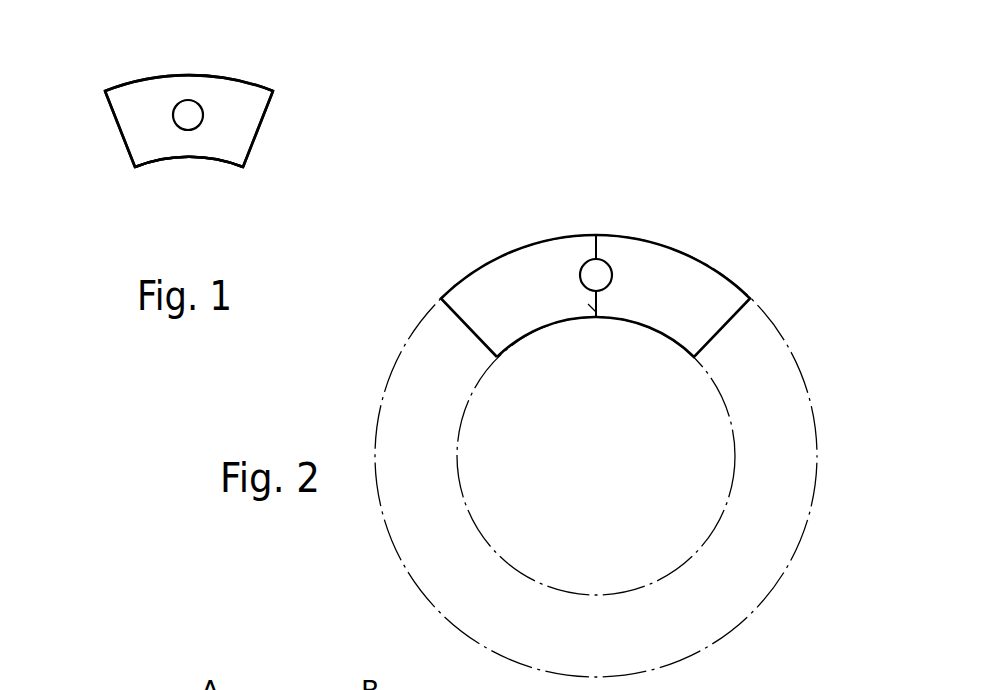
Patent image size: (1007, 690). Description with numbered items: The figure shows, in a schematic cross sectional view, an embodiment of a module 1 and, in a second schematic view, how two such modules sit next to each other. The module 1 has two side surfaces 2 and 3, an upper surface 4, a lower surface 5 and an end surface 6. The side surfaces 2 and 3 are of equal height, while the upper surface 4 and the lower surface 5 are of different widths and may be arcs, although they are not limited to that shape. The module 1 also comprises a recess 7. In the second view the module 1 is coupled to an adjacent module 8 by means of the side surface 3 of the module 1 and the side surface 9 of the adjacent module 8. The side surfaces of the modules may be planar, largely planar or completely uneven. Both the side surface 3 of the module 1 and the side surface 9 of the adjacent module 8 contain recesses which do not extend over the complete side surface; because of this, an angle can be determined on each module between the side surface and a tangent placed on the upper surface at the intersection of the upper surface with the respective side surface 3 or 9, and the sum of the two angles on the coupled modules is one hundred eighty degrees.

In FIG. 1, the module 1 is at (324, 88).
In FIG. 2, the module 1 is at (493, 295).
In FIG. 1, the side surface 2 is at (113, 115).
In FIG. 1, the side surface 3 is at (267, 113).
In FIG. 2, the side surface 3 is at (600, 303).
In FIG. 1, the upper surface 4 is at (168, 75).
In FIG. 1, the lower surface 5 is at (160, 162).
In FIG. 1, the end surface 6 is at (228, 140).
In FIG. 1, the recess 7 is at (198, 102).
In FIG. 2, the recess 7 is at (582, 267).
In FIG. 2, the adjacent module 8 is at (698, 297).
In FIG. 2, the side surface 9 is at (591, 304).